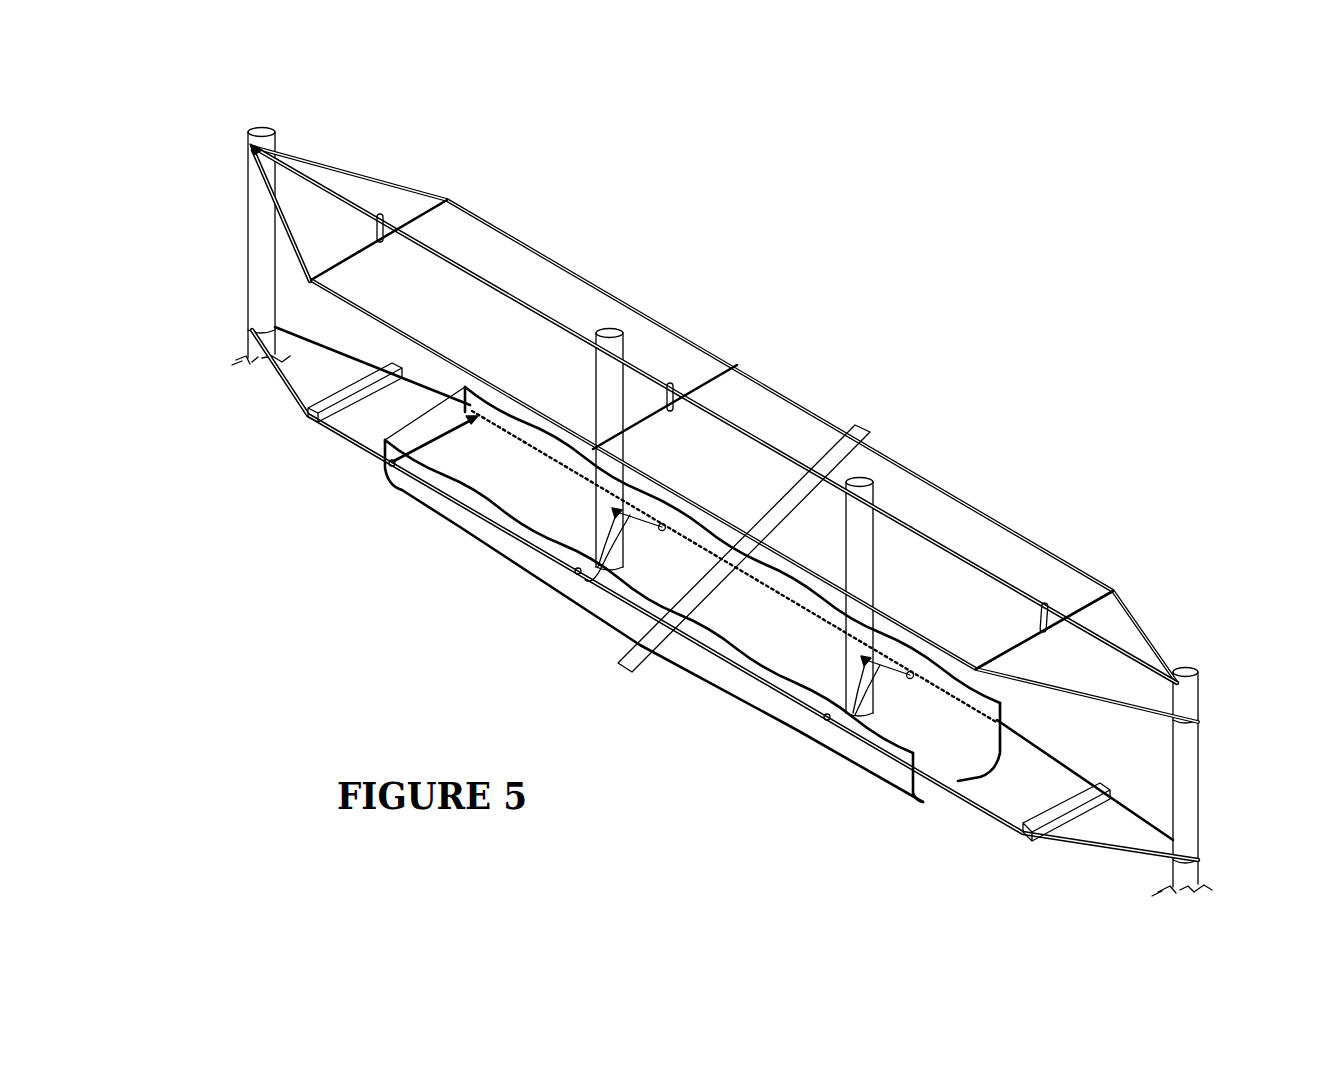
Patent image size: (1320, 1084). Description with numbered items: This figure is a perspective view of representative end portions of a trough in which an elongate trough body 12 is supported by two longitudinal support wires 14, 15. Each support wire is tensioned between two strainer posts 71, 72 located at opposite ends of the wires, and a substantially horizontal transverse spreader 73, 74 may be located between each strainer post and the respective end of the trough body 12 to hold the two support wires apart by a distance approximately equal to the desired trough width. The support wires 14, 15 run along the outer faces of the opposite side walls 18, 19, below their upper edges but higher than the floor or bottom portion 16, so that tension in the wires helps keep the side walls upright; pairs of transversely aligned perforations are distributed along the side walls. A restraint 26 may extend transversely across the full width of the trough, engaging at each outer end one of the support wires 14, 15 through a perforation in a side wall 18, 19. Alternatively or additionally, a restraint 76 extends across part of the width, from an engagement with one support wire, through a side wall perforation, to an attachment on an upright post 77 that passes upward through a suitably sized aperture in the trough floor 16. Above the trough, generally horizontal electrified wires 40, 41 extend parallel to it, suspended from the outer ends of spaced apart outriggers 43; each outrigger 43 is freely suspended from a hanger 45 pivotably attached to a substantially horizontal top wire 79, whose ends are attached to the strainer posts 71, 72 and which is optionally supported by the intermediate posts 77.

The elongate trough body 12 is at (440, 594).
The longitudinal support wire 14 is at (1020, 835).
The longitudinal support wire 15 is at (1090, 774).
The floor or bottom portion 16 is at (955, 780).
The side wall 18 is at (865, 762).
The side wall 19 is at (988, 740).
The restraint 26 is at (438, 440).
The electrified wire 40 is at (360, 303).
The electrified wire 41 is at (538, 250).
The outrigger 43 is at (432, 203).
The hanger 45 is at (376, 225).
The strainer post 71 is at (267, 265).
The strainer post 72 is at (1196, 785).
The transverse spreader 73 is at (342, 392).
The transverse spreader 74 is at (1045, 832).
The restraint 76 is at (605, 575).
The upright post 77 is at (620, 332).
The top wire 79 is at (793, 442).